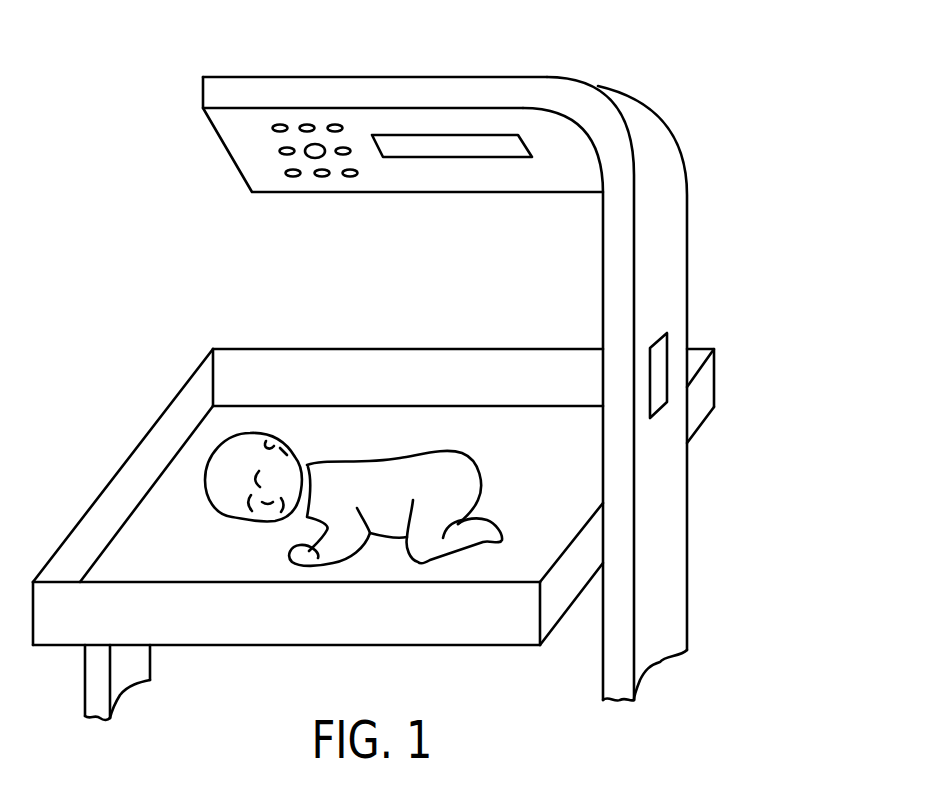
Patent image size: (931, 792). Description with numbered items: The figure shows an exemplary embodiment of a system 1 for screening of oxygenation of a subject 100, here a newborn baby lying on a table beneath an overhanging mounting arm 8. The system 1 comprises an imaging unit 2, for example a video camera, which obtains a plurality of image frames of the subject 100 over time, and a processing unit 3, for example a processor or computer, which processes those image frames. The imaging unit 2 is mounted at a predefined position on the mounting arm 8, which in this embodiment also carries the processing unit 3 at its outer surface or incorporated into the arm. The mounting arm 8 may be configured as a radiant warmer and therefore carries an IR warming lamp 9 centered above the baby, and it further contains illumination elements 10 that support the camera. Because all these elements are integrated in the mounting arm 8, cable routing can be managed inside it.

The system 1 is at (712, 63).
The imaging unit 2 is at (313, 145).
The processing unit 3 is at (657, 357).
The mounting arm 8 is at (410, 100).
The IR warming lamp 9 is at (442, 160).
The illumination elements 10 is at (289, 177).
The subject 100 is at (372, 440).